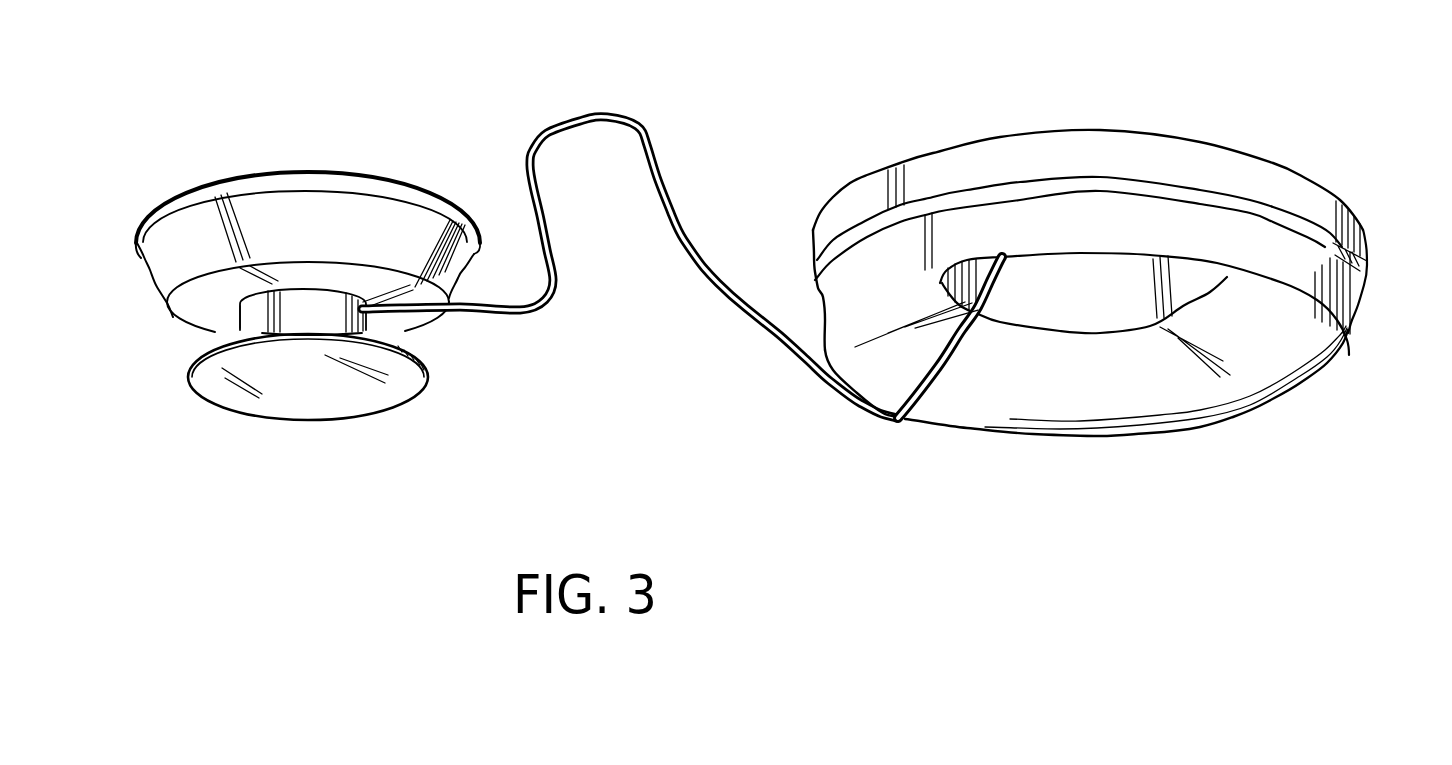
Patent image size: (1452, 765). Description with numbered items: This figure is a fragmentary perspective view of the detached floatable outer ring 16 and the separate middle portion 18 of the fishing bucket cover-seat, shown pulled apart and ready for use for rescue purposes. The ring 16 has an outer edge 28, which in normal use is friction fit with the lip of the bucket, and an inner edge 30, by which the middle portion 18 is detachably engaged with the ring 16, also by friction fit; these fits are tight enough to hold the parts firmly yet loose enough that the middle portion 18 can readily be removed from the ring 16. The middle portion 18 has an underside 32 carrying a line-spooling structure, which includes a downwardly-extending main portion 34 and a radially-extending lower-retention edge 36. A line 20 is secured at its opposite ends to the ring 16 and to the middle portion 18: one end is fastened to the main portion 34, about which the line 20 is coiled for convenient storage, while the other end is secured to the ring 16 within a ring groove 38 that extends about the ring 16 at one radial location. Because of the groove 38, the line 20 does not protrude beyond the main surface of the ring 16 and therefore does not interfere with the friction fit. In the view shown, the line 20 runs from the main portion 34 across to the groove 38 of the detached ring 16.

The floatable outer ring 16 is at (1236, 131).
The middle portion 18 is at (338, 151).
The line 20 is at (648, 149).
The outer edge 28 is at (1331, 290).
The inner edge 30 is at (1110, 303).
The underside 32 is at (403, 322).
The main portion 34 is at (270, 318).
The lower-retention edge 36 is at (227, 383).
The ring groove 38 is at (928, 398).